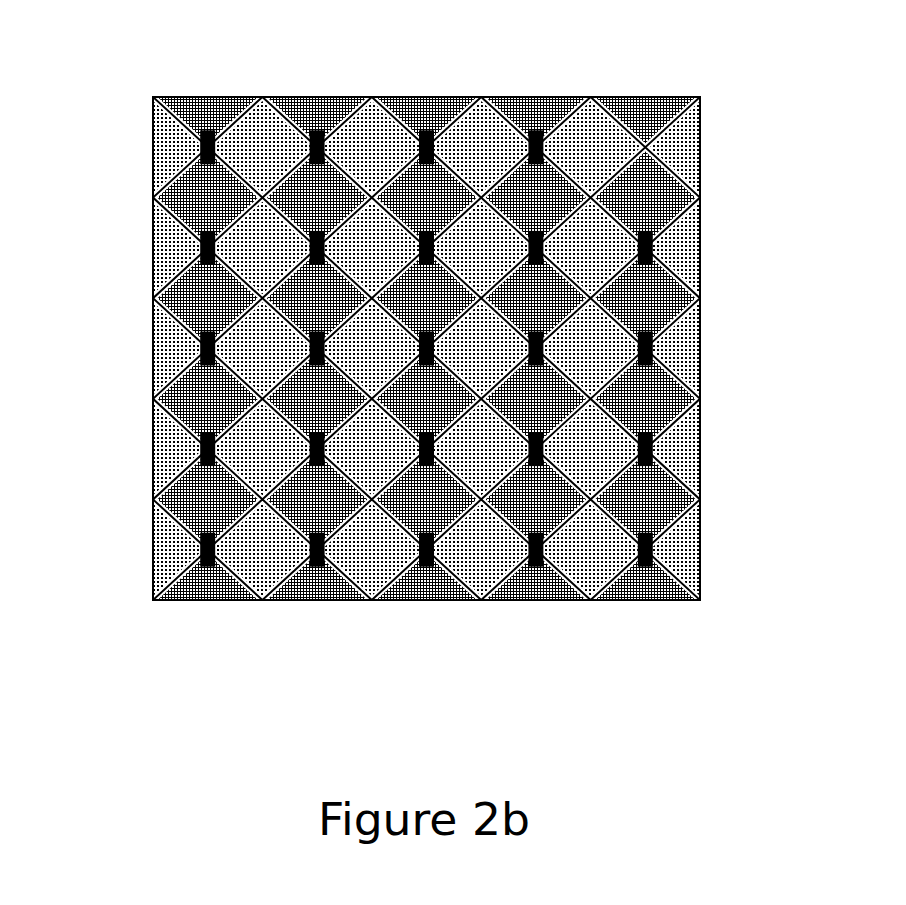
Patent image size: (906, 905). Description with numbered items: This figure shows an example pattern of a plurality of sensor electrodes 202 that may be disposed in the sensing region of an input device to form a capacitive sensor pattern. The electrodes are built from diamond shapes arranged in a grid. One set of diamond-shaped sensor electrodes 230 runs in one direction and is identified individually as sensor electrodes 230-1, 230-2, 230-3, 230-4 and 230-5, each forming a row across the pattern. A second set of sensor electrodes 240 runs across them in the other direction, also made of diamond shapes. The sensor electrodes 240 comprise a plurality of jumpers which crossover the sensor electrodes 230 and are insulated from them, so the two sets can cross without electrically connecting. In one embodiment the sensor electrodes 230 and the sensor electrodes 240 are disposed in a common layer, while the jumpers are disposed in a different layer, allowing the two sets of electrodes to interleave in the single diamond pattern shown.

The plurality of sensor electrodes 202 is at (187, 70).
The sensor electrodes 240 is at (697, 88).
The sensor electrodes 230 is at (712, 103).
The sensor electrode 230-1 is at (153, 155).
The sensor electrode 230-2 is at (153, 246).
The sensor electrode 230-3 is at (153, 347).
The sensor electrode 230-4 is at (153, 449).
The sensor electrode 230-5 is at (153, 551).